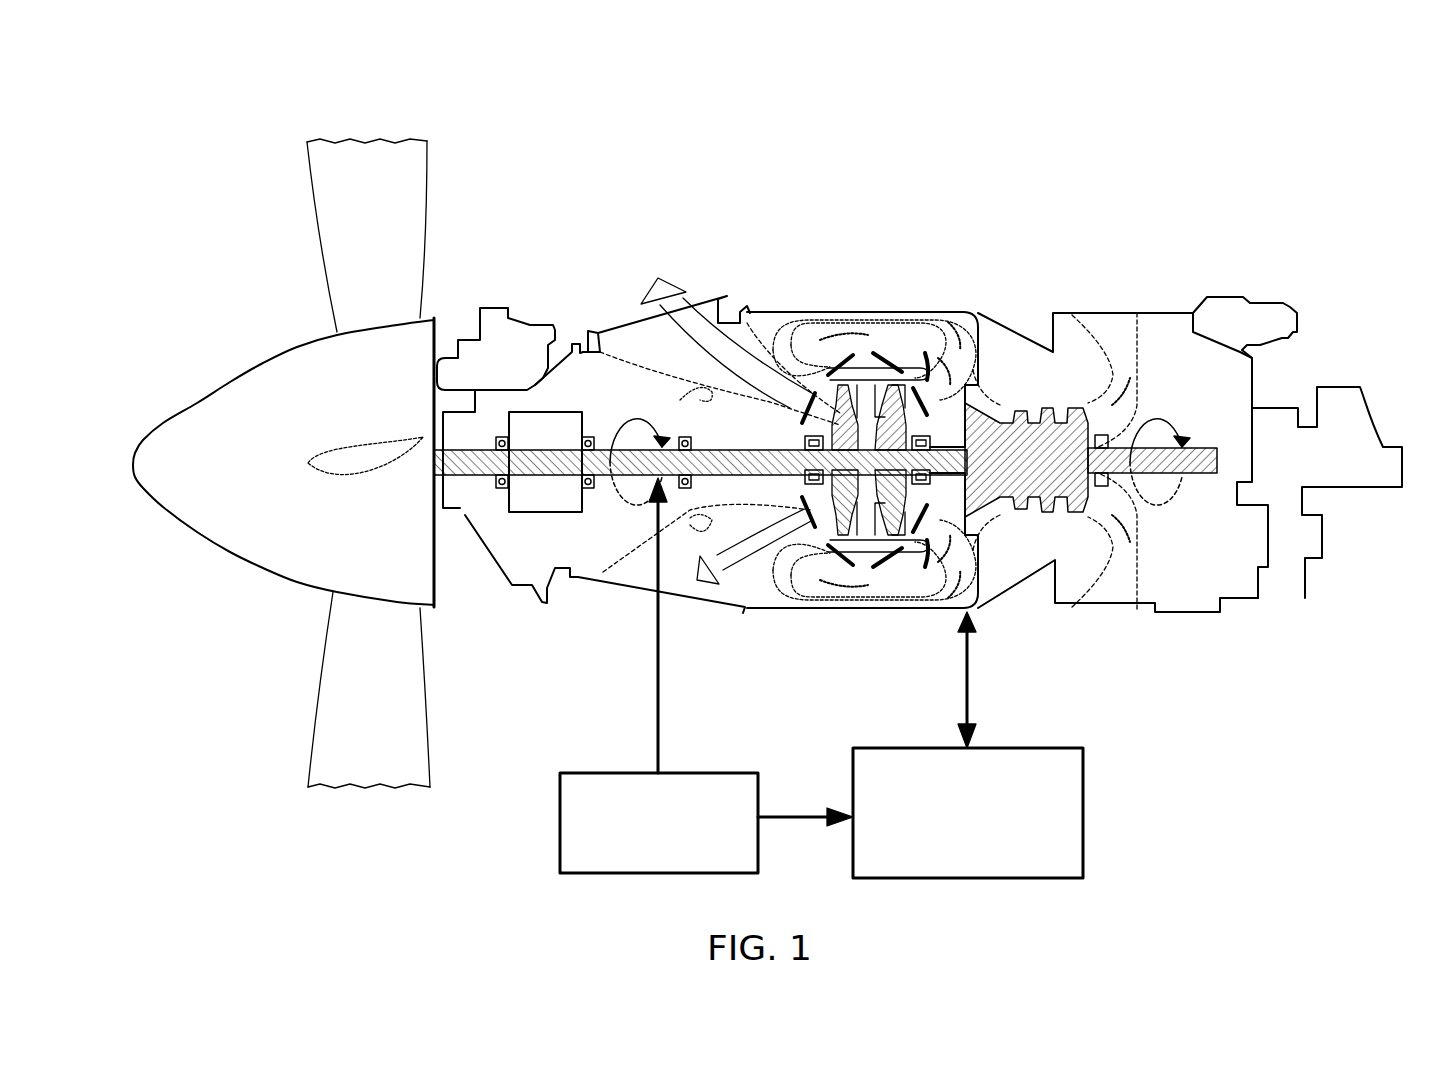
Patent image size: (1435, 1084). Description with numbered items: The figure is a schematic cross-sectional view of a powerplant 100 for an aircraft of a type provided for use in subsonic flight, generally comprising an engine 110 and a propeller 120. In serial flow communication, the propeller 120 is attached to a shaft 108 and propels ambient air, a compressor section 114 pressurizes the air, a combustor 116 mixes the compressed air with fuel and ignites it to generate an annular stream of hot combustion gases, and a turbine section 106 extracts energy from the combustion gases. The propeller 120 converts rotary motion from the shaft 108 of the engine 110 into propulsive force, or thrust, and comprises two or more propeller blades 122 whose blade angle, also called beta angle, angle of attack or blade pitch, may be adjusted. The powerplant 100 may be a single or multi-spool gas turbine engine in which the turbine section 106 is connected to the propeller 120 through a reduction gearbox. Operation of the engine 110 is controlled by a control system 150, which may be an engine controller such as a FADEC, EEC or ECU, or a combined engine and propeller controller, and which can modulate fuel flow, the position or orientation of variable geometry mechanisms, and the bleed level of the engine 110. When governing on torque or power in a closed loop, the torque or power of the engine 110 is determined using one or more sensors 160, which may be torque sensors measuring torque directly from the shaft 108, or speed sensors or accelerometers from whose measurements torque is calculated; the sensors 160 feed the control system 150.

The powerplant 100 is at (1057, 70).
The turbine section 106 is at (800, 488).
The shaft 108 is at (462, 468).
The engine 110 is at (1298, 270).
The compressor section 114 is at (1015, 545).
The combustor 116 is at (892, 347).
The propeller 120 is at (433, 128).
The propeller blades 122 is at (403, 190).
The control system 150 is at (992, 864).
The sensor(s) 160 is at (683, 859).